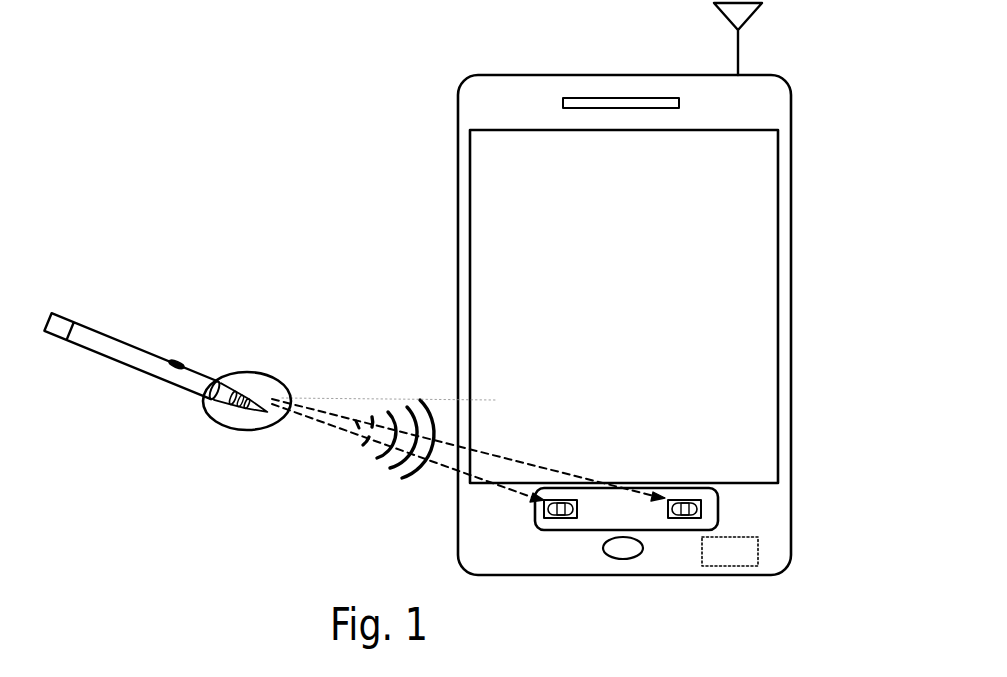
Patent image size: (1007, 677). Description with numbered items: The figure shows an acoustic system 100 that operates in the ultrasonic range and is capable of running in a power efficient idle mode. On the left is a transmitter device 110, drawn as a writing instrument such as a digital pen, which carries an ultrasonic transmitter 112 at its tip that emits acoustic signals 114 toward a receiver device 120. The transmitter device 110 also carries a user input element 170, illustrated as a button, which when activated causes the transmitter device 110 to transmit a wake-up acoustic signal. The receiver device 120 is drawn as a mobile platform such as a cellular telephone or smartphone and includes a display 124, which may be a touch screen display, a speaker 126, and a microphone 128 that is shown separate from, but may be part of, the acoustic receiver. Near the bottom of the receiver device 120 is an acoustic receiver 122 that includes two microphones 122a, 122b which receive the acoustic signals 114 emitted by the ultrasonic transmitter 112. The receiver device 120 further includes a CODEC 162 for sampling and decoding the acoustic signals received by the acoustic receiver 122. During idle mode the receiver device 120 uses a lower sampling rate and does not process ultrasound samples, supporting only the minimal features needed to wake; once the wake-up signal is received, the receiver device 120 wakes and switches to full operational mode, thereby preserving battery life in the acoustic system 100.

The acoustic system 100 is at (310, 192).
The transmitter device 110 is at (166, 315).
The ultrasonic transmitter 112 is at (239, 383).
The acoustic signals 114 is at (428, 408).
The receiver device 120 is at (457, 112).
The acoustic receiver 122 is at (613, 487).
The microphone 122a is at (544, 508).
The microphone 122b is at (694, 500).
The display 124 is at (470, 187).
The speaker 126 is at (603, 103).
The microphone 128 is at (599, 553).
The CODEC 162 is at (730, 566).
The user input element 170 is at (179, 361).